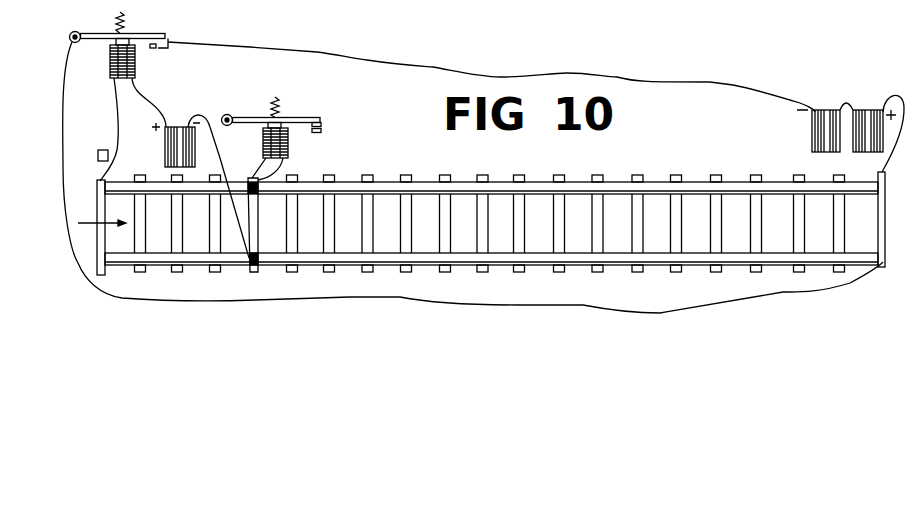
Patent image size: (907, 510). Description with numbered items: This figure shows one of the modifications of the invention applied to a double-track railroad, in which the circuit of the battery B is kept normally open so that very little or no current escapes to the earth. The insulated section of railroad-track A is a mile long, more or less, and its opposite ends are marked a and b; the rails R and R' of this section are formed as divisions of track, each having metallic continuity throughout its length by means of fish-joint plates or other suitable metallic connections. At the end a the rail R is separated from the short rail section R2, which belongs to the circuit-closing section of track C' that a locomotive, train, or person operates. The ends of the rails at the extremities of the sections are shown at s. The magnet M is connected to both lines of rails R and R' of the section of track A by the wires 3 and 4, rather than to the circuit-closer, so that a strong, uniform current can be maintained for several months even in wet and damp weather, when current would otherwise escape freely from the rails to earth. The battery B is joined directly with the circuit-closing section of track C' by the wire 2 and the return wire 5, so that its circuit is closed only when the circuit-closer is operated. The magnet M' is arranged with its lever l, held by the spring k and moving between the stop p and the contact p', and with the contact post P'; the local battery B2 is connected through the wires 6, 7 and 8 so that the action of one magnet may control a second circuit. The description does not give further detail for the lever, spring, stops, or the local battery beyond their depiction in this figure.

The wire from contact p of magnet M' to battery B 2 is at (491, 77).
The wire from magnet M to rail joint 3 is at (270, 170).
The wire from magnet M to rail joint 4 is at (257, 168).
The return wire from lever pivot to rail end 5 is at (473, 177).
The wire from battery B2 to rail joint 6 is at (218, 186).
The wire from magnet M' to battery B2 7 is at (149, 102).
The wire from magnet M' to rail end 8 is at (114, 129).
The pivoted lever (armature lever) l is at (195, 73).
The retracting spring k is at (201, 65).
The stop / contact p is at (247, 76).
The contact point p' is at (237, 92).
The electromagnet M' is at (109, 59).
The magnet M is at (286, 141).
The contact post P' is at (92, 148).
The local battery B2 is at (176, 145).
The battery B is at (850, 125).
The section of rails R2 is at (176, 181).
The section of rails R is at (568, 179).
The section of rails R' is at (491, 250).
The track section (block) C' is at (178, 223).
The insulated section of railroad-track A is at (524, 223).
The end of section a is at (260, 225).
The rail end connections s is at (490, 224).
The end of section b is at (832, 223).